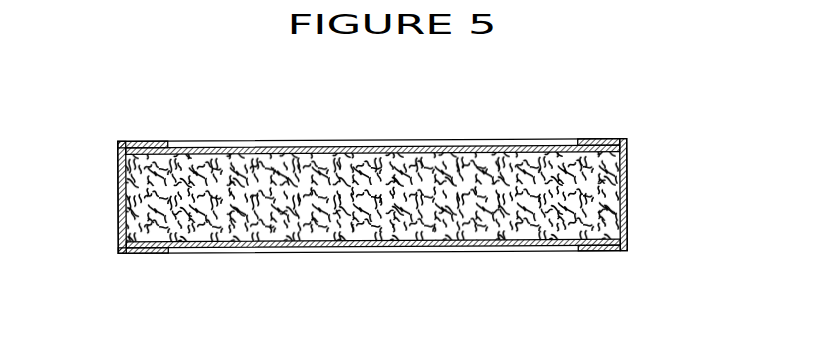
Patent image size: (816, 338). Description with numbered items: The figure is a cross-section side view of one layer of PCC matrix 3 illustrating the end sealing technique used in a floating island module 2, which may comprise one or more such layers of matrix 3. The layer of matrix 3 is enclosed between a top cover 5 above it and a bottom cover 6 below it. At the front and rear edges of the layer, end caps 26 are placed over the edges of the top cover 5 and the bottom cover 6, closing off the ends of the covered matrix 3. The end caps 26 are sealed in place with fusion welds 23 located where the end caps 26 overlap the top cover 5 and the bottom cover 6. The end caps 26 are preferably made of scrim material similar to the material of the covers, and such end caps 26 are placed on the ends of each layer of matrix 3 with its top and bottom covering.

The floating island module 2 is at (531, 138).
The PCC matrix 3 is at (617, 202).
The top cover 5 is at (235, 147).
The bottom cover 6 is at (235, 248).
The fusion welds 23 is at (155, 141).
The end caps 26 is at (118, 198).